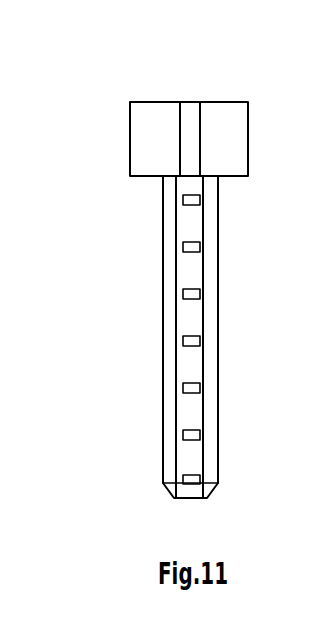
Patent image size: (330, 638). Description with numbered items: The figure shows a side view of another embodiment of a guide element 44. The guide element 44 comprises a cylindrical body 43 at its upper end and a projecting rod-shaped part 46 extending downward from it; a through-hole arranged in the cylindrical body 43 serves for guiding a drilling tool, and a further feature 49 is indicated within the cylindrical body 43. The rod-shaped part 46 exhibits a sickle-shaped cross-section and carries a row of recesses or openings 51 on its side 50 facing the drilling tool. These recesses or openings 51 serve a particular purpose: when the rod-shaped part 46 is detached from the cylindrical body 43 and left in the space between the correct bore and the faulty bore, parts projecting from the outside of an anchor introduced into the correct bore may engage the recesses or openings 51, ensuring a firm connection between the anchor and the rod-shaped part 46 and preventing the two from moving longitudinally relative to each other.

The guide element 44 is at (276, 125).
The cylindrical body 43 is at (146, 137).
The slot in head 49 is at (194, 114).
The rod-shaped part 46 is at (210, 331).
The side facing the drilling tool 50 is at (210, 226).
The recesses or openings 51 is at (191, 340).